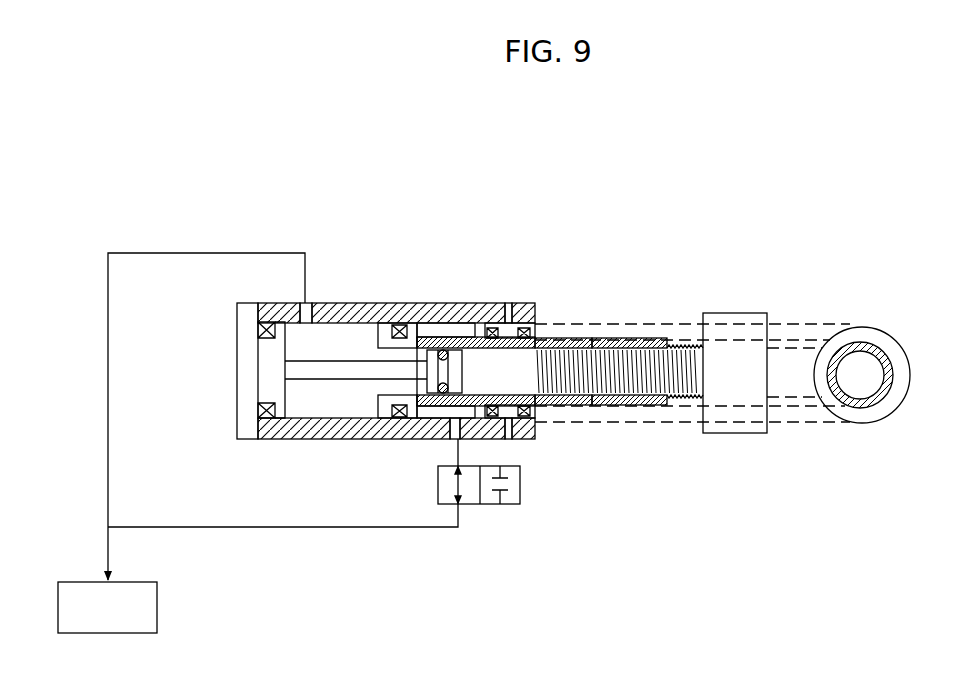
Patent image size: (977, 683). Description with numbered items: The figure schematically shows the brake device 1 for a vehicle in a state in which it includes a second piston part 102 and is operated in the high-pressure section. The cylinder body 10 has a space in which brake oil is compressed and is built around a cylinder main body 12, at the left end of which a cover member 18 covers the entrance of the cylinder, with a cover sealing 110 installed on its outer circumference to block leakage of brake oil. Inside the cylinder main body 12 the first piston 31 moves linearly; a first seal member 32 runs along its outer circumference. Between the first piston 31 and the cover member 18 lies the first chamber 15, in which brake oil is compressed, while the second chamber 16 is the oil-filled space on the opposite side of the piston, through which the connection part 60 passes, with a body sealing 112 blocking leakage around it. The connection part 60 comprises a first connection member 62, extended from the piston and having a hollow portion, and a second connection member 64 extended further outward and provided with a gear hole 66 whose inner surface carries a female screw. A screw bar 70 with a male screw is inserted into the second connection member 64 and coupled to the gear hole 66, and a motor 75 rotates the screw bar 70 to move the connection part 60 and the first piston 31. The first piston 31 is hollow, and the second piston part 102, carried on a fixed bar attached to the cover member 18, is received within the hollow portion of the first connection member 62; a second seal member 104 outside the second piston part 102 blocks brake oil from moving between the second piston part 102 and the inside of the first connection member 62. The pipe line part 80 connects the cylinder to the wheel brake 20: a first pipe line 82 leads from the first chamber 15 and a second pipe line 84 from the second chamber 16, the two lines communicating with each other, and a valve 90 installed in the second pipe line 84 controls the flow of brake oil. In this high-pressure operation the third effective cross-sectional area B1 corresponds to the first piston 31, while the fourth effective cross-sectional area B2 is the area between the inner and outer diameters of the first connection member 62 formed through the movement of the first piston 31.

The brake device 1 is at (716, 202).
The cylinder body 10 is at (465, 298).
The cylinder main body 12 is at (392, 312).
The first chamber 15 is at (330, 330).
The second chamber 16 is at (442, 330).
The cover member 18 is at (243, 340).
The wheel brake 20 is at (157, 599).
The first piston 31 is at (383, 400).
The first seal member 32 is at (398, 420).
The connection part 60 is at (562, 336).
The first connection member 62 is at (587, 346).
The second connection member 64 is at (640, 345).
The gear hole 66 is at (670, 340).
The screw bar 70 is at (686, 400).
The motor 75 is at (752, 313).
The pipe line part 80 is at (337, 553).
The first pipe line 82 is at (108, 360).
The second pipe line 84 is at (415, 527).
The valve 90 is at (496, 512).
The second piston part 102 is at (460, 378).
The second seal member 104 is at (443, 400).
The cover sealing 110 is at (268, 322).
The body sealing 112 is at (522, 330).
The third effective cross-sectional area B1 is at (888, 330).
The fourth effective cross-sectional area B2 is at (893, 363).